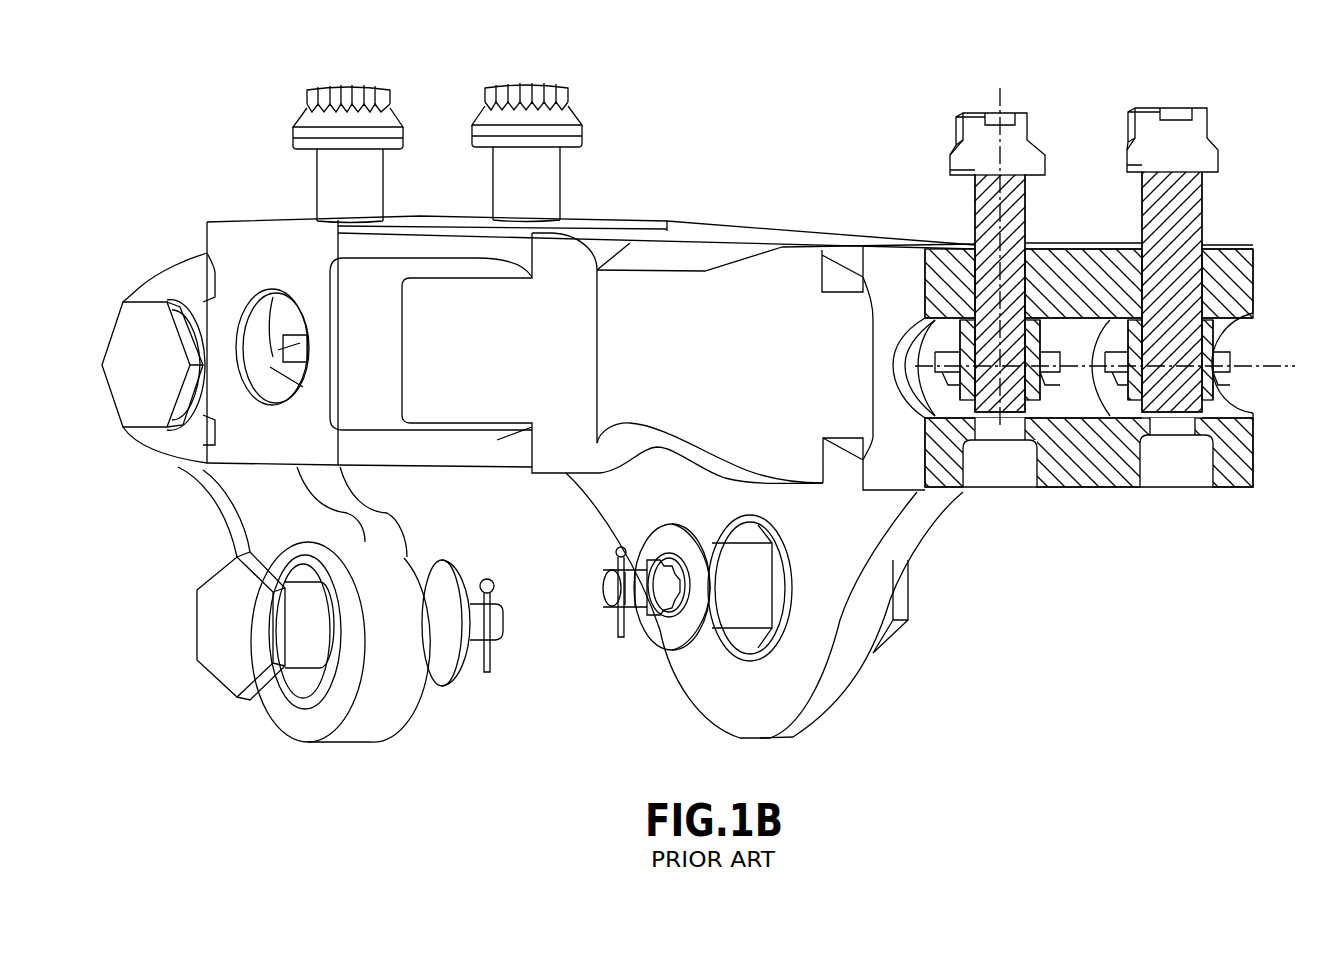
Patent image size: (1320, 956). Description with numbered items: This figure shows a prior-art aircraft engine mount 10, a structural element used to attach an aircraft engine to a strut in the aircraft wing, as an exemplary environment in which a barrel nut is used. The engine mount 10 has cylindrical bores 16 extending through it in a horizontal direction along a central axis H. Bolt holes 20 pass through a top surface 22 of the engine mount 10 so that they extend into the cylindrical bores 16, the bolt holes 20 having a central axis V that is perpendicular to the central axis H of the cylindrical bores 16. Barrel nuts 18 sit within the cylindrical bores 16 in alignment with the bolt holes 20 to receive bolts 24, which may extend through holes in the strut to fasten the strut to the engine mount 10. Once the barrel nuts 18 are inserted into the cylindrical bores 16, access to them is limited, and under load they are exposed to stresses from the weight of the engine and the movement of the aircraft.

The aircraft engine mount 10 is at (156, 197).
The cylindrical bores 16 is at (1128, 445).
The barrel nuts 18 is at (1225, 348).
The bolt holes 20 is at (1148, 245).
The top surface 22 is at (1215, 247).
The bolts 24 is at (1190, 135).
The central axis of the bolt holes V is at (1000, 95).
The central axis of the cylindrical bores H is at (1262, 366).